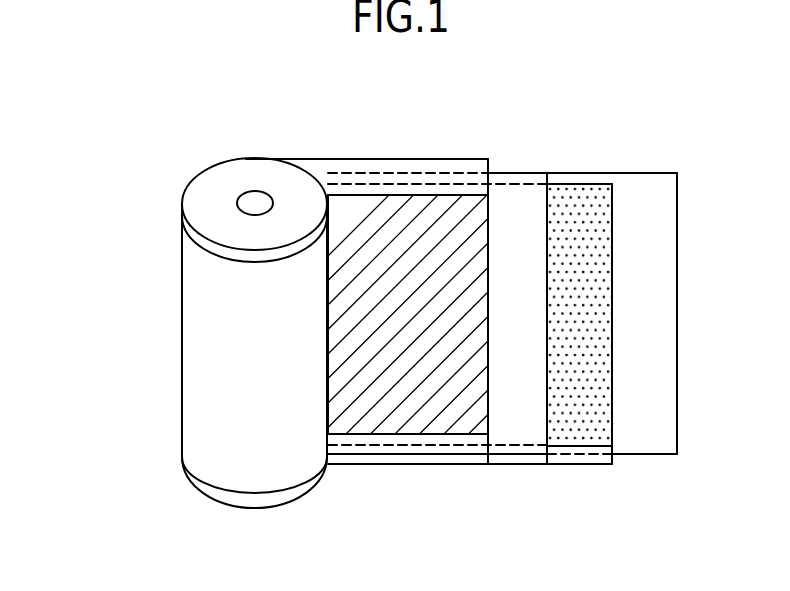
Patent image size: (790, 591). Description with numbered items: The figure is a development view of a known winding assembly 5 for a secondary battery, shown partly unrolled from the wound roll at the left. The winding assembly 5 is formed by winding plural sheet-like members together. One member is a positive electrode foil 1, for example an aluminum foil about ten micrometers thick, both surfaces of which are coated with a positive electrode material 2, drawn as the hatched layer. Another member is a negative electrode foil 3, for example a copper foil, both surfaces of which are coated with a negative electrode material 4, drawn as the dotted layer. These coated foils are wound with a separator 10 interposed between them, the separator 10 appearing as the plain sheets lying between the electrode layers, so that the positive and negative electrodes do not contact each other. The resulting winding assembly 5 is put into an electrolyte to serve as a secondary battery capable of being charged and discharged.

The positive electrode foil 1 is at (344, 167).
The positive electrode material 2 is at (437, 208).
The negative electrode foil 3 is at (517, 458).
The negative electrode material 4 is at (580, 437).
The winding assembly 5 is at (137, 356).
The separator 10 is at (521, 203).